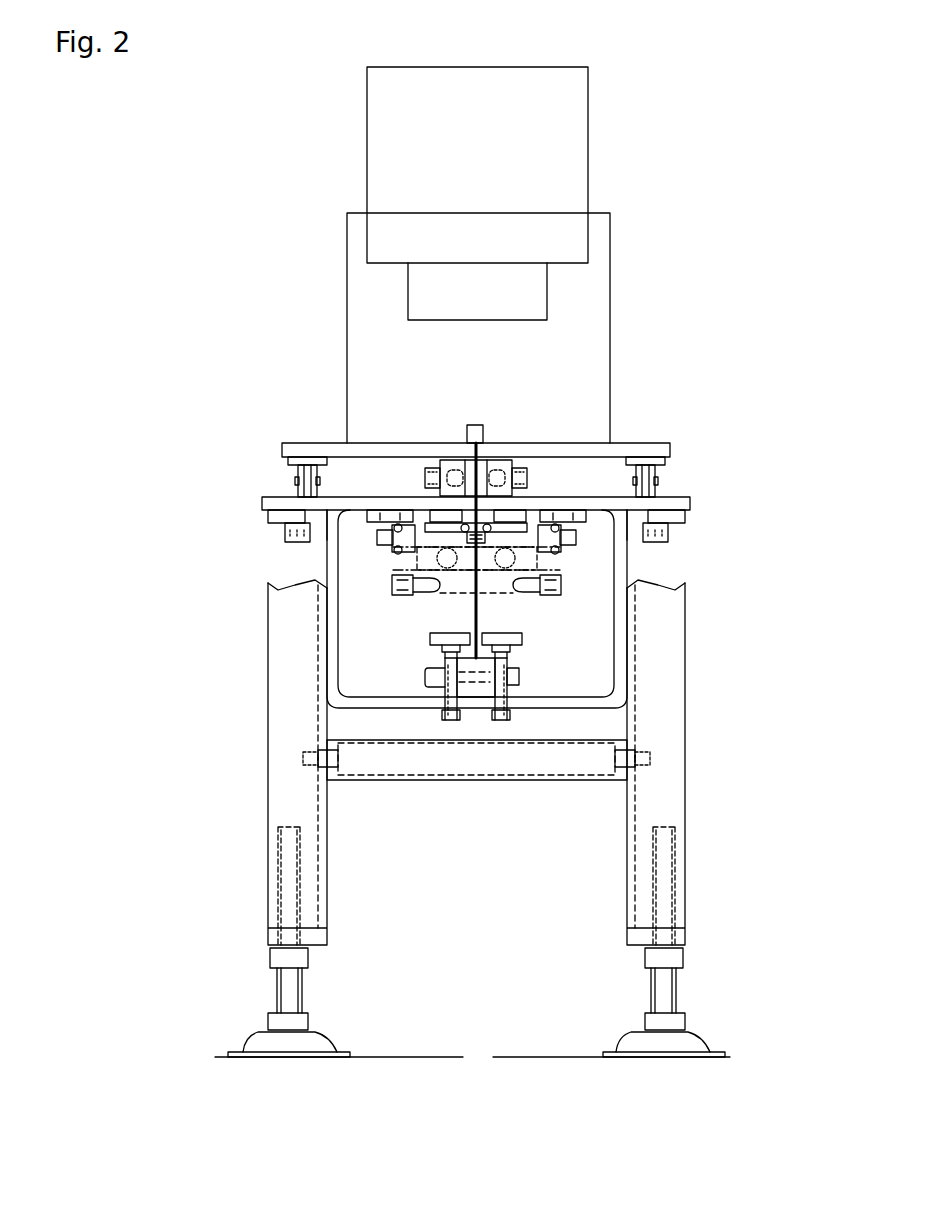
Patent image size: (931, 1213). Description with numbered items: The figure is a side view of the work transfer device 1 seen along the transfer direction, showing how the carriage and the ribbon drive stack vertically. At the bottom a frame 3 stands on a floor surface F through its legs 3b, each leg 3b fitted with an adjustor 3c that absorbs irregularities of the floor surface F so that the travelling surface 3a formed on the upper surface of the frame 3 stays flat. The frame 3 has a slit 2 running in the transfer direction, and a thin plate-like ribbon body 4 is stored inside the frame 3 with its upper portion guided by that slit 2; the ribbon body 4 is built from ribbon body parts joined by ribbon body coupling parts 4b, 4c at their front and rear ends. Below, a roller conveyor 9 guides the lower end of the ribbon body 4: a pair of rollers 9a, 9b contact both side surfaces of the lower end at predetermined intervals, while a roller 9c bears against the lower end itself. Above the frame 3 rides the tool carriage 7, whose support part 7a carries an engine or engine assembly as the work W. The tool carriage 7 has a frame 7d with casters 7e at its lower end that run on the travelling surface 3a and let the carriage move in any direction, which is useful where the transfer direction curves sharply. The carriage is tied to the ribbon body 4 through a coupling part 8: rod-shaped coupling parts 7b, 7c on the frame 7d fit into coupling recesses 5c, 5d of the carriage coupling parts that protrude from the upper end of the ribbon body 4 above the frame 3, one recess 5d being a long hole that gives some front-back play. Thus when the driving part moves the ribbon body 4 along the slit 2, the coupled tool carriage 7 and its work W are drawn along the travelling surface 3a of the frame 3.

The work transfer device 1 is at (211, 245).
The work W is at (588, 152).
The tool carriage 7 is at (610, 283).
The support part 7a is at (588, 240).
The coupling part 7b is at (370, 399).
The coupling part 7c is at (472, 458).
The frame 7d is at (335, 443).
The caster 7e is at (300, 490).
The coupling recess 5c is at (370, 402).
The coupling recess 5d is at (467, 445).
The coupling part 8 is at (482, 462).
The slit 2 is at (482, 482).
The frame 3 is at (690, 504).
The travelling surface 3a is at (689, 488).
The leg 3b is at (275, 777).
The adjustor 3c is at (282, 993).
The ribbon body 4 is at (482, 614).
The ribbon body coupling part 4b is at (362, 555).
The ribbon body coupling part 4c is at (392, 575).
The roller conveyor 9 is at (190, 572).
The roller 9a is at (478, 632).
The roller 9b is at (430, 638).
The roller 9c is at (493, 666).
The floor surface F is at (472, 1055).